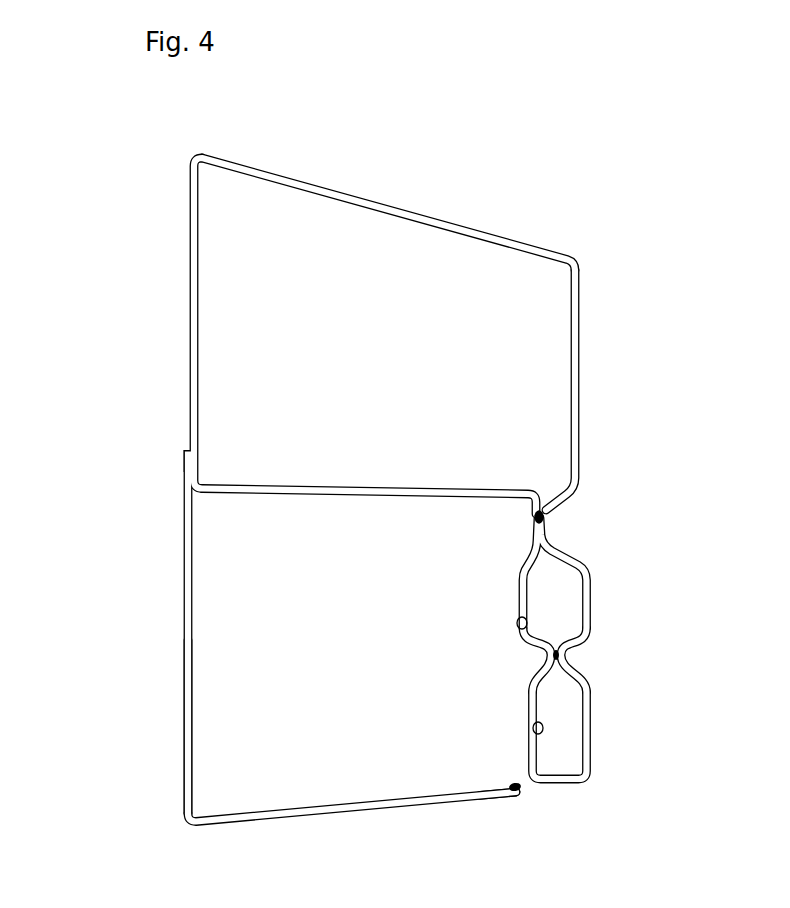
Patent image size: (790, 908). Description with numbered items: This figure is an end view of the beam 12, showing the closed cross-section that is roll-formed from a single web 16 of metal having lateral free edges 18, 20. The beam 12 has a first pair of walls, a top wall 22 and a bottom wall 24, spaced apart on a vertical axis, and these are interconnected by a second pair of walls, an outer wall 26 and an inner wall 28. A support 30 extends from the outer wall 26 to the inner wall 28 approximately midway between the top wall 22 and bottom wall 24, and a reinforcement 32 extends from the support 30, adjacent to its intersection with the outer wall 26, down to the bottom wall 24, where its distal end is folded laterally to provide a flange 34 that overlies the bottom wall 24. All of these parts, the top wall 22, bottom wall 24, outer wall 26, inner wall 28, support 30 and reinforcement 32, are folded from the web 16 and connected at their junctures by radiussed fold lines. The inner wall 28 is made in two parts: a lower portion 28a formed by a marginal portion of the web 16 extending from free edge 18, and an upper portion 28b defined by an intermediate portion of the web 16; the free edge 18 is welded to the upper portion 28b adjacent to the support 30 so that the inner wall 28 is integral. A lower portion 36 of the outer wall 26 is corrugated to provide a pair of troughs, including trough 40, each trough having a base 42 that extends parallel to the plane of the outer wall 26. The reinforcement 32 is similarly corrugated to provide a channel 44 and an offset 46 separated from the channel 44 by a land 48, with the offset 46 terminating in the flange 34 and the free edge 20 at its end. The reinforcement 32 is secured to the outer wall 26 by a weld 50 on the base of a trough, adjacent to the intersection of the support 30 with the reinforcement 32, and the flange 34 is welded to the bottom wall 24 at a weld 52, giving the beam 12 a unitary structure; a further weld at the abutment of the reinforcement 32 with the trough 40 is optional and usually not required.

The beam 12 is at (368, 352).
The web 16 is at (288, 632).
The free edge 18 is at (183, 450).
The free edge 20 is at (498, 786).
The top wall 22 is at (421, 208).
The bottom wall 24 is at (352, 759).
The outer wall 26 is at (592, 448).
The inner wall 28 is at (124, 628).
The lower portion of inner wall 28a is at (183, 658).
The upper portion of inner wall 28b is at (188, 265).
The support 30 is at (352, 497).
The reinforcement 32 is at (516, 606).
The flange 34 is at (596, 777).
The lower portion of outer wall 36 is at (562, 525).
The trough 40 is at (439, 521).
The base 42 is at (543, 503).
The channel 44 is at (517, 625).
The offset 46 is at (533, 735).
The land 48 is at (545, 657).
The weld 50 is at (535, 519).
The weld 52 is at (514, 796).